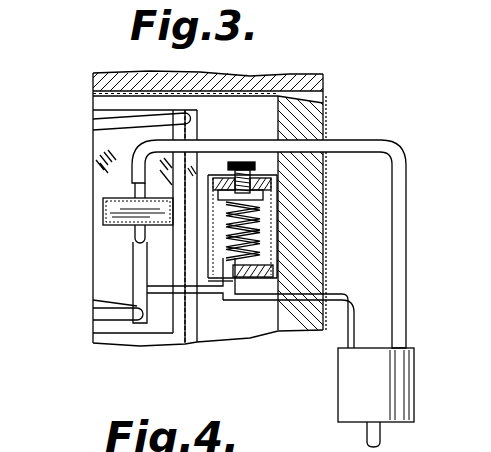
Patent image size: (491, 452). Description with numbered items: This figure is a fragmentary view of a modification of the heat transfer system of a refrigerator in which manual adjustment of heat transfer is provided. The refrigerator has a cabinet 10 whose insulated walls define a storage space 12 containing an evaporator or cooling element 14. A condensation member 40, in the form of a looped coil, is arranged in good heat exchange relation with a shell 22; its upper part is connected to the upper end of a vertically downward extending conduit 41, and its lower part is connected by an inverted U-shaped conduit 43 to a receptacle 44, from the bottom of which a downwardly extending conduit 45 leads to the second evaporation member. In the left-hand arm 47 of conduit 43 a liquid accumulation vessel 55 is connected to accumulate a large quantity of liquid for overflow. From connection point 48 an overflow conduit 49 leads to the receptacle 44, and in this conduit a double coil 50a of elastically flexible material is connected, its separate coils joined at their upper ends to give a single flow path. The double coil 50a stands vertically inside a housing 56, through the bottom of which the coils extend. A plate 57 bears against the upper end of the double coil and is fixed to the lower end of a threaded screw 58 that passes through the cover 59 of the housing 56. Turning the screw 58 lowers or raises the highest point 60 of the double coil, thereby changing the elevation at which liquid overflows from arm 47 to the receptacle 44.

The cabinet 10 is at (326, 79).
The storage space 12 is at (224, 318).
The evaporator or cooling element 14 is at (148, 343).
The shell 22 is at (102, 111).
The condensation member 40 is at (104, 127).
The conduit 41 is at (190, 330).
The inverted U-shaped conduit 43 is at (367, 143).
The receptacle 44 is at (415, 371).
The downwardly extending conduit 45 is at (381, 438).
The left-hand arm 47 is at (133, 249).
The connection point 48 is at (150, 286).
The overflow conduit 49 is at (341, 293).
The double coil 50a is at (258, 213).
The liquid accumulation vessel 55 is at (103, 206).
The housing 56 is at (264, 278).
The plate 57 is at (250, 191).
The threaded screw 58 is at (246, 160).
The cover 59 is at (275, 176).
The highest point 60 is at (220, 196).